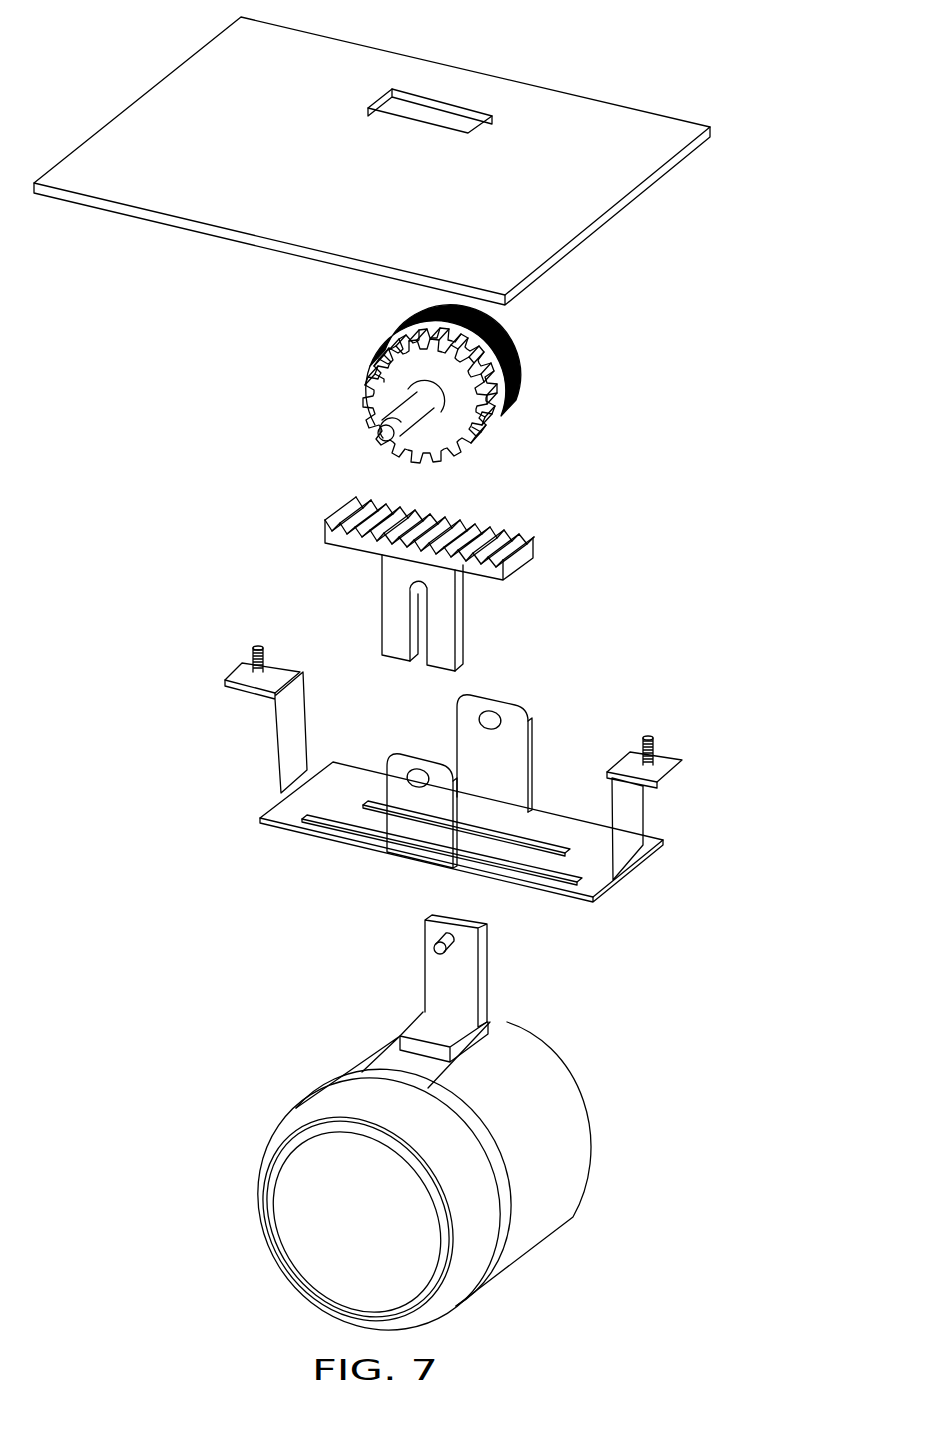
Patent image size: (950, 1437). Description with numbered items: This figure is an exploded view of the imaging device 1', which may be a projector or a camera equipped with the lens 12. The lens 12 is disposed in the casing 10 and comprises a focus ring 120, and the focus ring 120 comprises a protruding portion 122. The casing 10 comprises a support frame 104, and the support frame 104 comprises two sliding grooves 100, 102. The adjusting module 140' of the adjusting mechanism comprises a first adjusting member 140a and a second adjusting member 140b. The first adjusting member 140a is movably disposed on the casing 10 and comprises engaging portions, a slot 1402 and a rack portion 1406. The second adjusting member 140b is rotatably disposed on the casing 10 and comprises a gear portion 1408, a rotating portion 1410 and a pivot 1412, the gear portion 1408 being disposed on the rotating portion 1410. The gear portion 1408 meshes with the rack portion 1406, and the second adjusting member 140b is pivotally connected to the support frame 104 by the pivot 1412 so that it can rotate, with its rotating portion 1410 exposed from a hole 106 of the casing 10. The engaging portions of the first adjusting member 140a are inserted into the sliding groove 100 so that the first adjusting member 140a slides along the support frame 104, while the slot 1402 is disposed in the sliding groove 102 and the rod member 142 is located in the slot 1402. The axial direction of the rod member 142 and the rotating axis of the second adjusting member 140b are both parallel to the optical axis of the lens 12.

The imaging device 1' is at (432, 691).
The casing 10 is at (612, 103).
The hole 106 is at (438, 100).
The adjusting module 140' is at (376, 488).
The first adjusting member 140a is at (382, 603).
The second adjusting member 140b is at (352, 410).
The rotating portion 1410 is at (517, 357).
The gear portion 1408 is at (487, 427).
The pivot 1412 is at (417, 420).
The rack portion 1406 is at (533, 537).
The slot 1402 is at (427, 624).
The sliding groove 100 is at (547, 817).
The sliding groove 102 is at (557, 882).
The support frame 104 is at (657, 853).
The focus ring 120 is at (563, 1127).
The protruding portion 122 is at (488, 973).
The rod member 142 is at (436, 948).
The lens 12 is at (328, 1252).